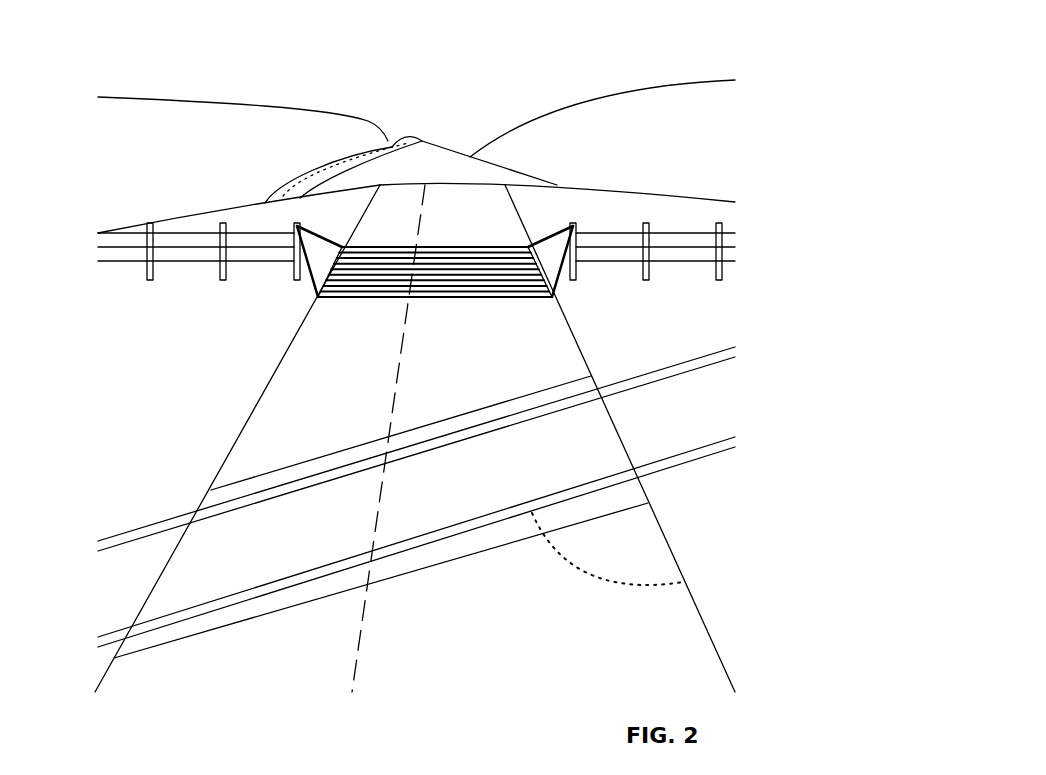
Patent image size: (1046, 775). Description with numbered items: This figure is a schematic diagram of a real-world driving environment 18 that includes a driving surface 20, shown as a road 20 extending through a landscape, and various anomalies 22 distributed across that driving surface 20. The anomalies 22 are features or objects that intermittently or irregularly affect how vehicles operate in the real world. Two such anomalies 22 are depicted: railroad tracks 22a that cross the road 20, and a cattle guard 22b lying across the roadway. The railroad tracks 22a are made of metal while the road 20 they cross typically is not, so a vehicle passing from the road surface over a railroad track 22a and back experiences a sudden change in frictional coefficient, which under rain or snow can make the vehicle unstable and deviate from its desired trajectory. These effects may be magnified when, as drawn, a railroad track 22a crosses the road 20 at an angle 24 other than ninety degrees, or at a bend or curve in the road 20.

The driving environment 18 is at (594, 48).
The driving surface 20 is at (279, 177).
The anomalies 22 is at (155, 509).
The railroad tracks 22a is at (362, 440).
The cattle guards 22b is at (452, 234).
The angle 24 is at (586, 578).